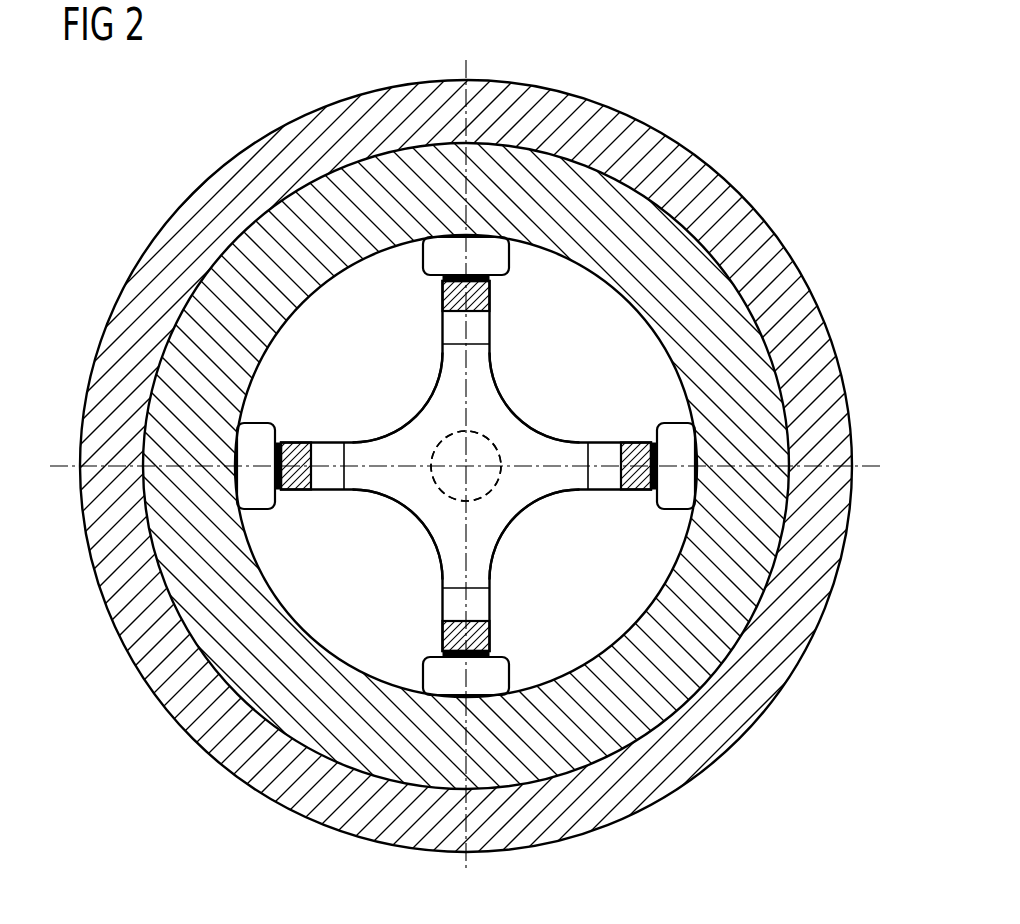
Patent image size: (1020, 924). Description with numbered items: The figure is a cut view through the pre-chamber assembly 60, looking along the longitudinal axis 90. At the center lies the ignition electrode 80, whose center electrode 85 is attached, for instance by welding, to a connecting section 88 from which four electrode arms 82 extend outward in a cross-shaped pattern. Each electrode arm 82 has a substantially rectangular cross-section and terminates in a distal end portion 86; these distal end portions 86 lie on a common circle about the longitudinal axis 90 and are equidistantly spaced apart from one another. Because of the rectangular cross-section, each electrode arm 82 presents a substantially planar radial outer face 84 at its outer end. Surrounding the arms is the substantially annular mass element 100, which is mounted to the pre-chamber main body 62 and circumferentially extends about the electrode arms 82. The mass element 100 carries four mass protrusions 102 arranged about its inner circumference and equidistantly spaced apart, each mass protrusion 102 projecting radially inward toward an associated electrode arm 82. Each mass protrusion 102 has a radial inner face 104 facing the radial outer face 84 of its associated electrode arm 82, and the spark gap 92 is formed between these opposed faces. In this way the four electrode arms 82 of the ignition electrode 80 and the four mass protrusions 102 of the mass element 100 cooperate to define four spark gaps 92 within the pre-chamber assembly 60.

The pre-chamber assembly 60 is at (683, 85).
The pre-chamber main body 62 is at (758, 224).
The mass element 100 is at (362, 198).
The ignition electrode 80 is at (510, 492).
The electrode arm 82 is at (450, 326).
The radial outer face 84 is at (478, 247).
The center electrode 85 is at (497, 479).
The distal end portion 86 is at (487, 297).
The connecting section 88 is at (425, 428).
The longitudinal axis 90 is at (454, 480).
The spark gap 92 is at (425, 285).
The mass protrusion 102 is at (425, 254).
The radial inner face 104 is at (493, 277).